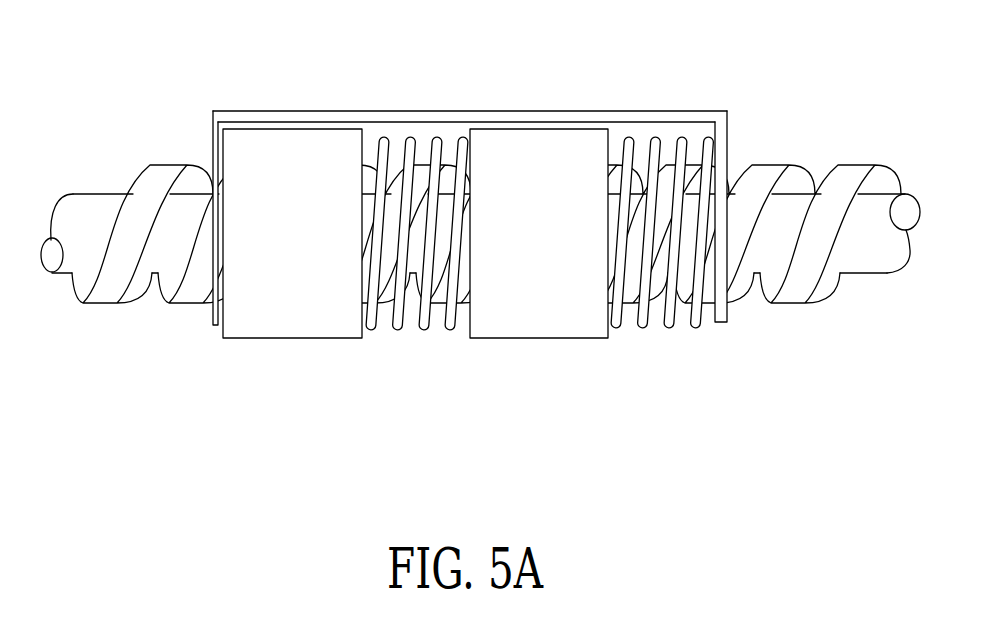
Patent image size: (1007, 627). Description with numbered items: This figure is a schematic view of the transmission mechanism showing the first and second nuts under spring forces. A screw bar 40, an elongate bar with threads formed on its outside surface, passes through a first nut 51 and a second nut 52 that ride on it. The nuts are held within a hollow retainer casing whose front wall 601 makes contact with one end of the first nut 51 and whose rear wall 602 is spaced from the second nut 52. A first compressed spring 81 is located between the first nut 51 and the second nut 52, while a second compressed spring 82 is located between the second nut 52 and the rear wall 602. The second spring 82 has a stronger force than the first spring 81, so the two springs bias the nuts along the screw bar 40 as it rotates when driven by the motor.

The screw bar 40 is at (875, 207).
The first nut 51 is at (307, 153).
The second nut 52 is at (542, 152).
The first spring 81 is at (397, 331).
The second spring 82 is at (670, 324).
The front wall 601 is at (215, 313).
The rear wall 602 is at (723, 313).